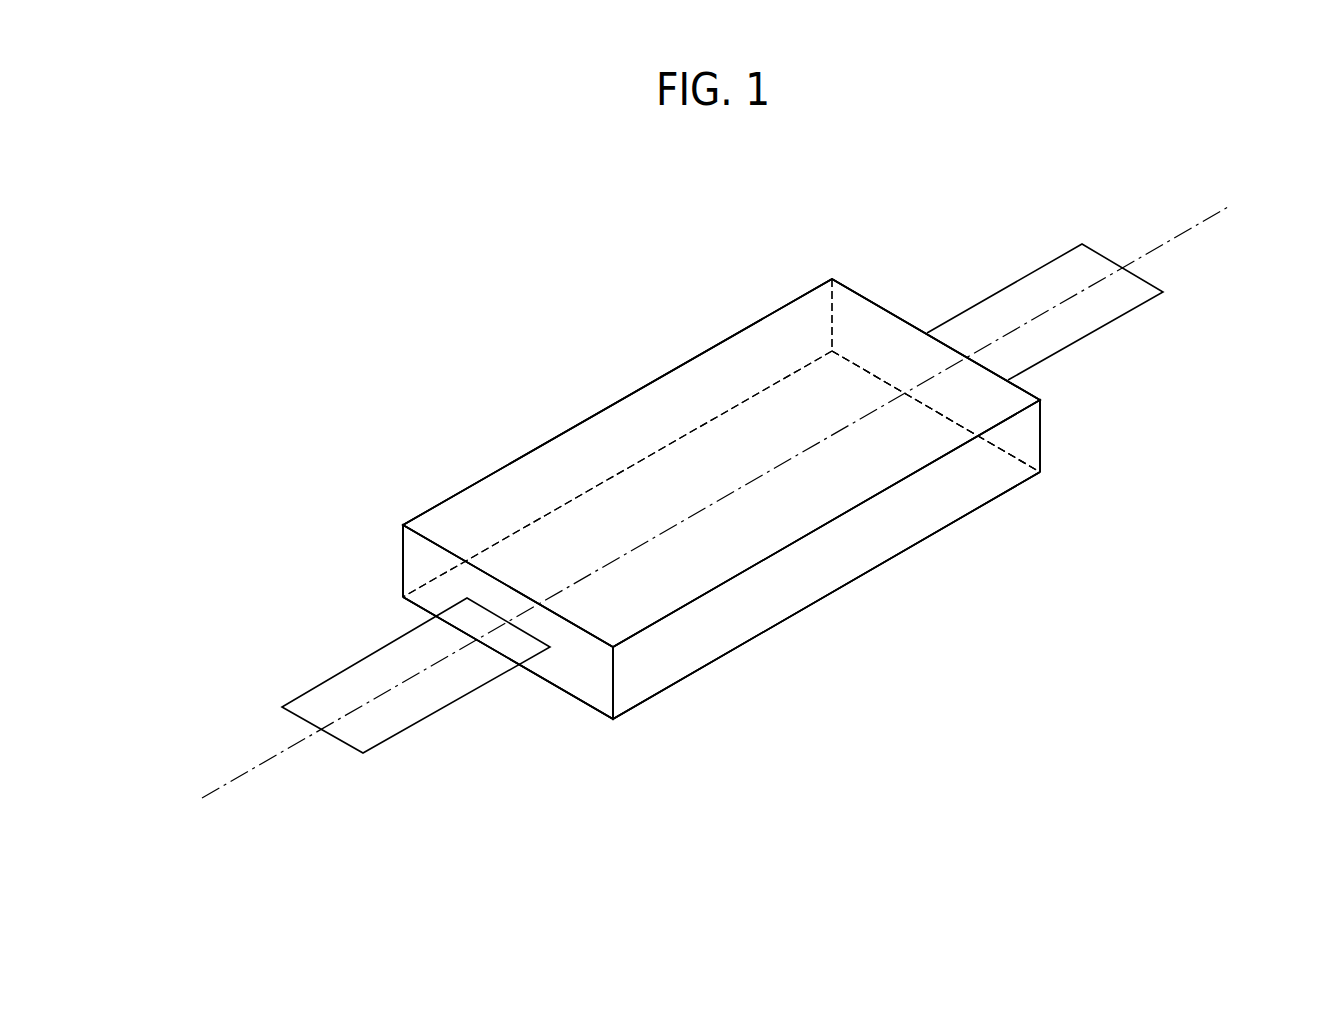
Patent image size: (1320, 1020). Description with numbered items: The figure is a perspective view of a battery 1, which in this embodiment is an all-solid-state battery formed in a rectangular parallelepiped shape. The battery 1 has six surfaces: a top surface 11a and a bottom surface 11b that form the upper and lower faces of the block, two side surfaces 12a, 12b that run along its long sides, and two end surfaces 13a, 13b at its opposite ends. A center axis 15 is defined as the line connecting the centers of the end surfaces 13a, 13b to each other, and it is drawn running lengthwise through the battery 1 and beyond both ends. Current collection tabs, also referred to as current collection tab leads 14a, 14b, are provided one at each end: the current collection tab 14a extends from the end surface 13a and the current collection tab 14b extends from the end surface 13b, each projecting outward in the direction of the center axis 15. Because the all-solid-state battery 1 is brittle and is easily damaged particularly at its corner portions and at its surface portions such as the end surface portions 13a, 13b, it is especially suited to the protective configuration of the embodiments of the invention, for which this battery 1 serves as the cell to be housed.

The battery 1 is at (492, 211).
The top surface 11a is at (697, 385).
The bottom surface 11b is at (779, 642).
The side surface 12a is at (498, 451).
The side surface 12b is at (936, 518).
The end surface 13a is at (412, 563).
The end surface 13b is at (905, 295).
The current collection tab 14a is at (337, 693).
The current collection tab 14b is at (1092, 260).
The center axis 15 is at (222, 788).